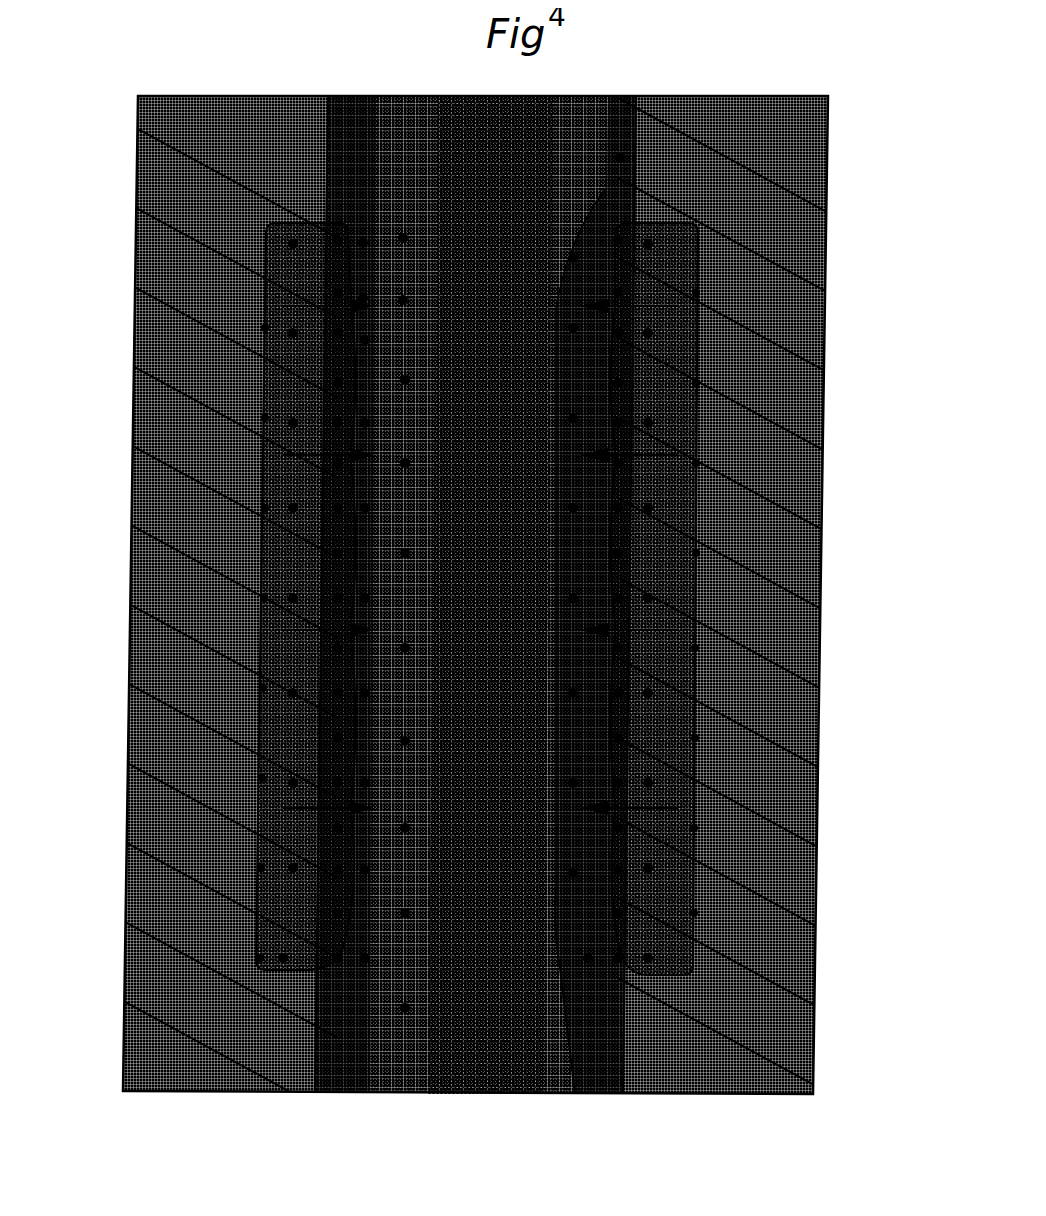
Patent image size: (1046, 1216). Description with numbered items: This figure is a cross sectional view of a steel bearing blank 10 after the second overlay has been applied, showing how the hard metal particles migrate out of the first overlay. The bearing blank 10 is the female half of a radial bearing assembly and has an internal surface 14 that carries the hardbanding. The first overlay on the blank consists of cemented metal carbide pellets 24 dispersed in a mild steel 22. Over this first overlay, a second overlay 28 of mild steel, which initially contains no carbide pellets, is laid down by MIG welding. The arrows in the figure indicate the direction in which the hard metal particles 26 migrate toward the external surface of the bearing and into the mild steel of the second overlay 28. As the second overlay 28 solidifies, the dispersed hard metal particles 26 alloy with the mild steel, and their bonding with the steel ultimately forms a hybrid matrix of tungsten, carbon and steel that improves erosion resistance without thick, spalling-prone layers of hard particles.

The bearing blank 10 is at (820, 240).
The internal surface 14 is at (357, 1087).
The mild steel 22 is at (290, 663).
The cemented metal carbide pellets 24 is at (285, 518).
The hard metal particles 26 is at (553, 585).
The second overlay 28 is at (570, 1087).